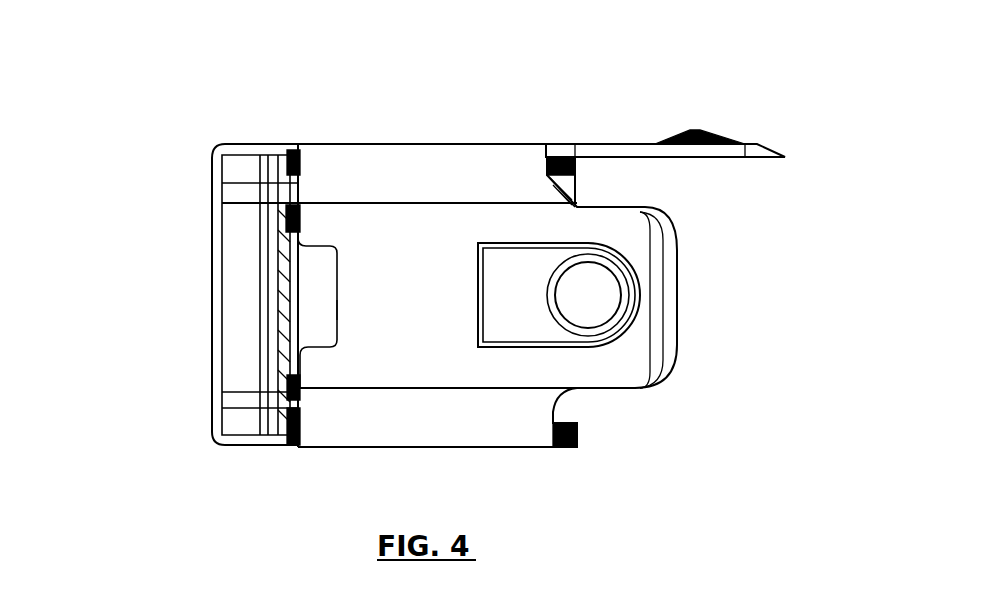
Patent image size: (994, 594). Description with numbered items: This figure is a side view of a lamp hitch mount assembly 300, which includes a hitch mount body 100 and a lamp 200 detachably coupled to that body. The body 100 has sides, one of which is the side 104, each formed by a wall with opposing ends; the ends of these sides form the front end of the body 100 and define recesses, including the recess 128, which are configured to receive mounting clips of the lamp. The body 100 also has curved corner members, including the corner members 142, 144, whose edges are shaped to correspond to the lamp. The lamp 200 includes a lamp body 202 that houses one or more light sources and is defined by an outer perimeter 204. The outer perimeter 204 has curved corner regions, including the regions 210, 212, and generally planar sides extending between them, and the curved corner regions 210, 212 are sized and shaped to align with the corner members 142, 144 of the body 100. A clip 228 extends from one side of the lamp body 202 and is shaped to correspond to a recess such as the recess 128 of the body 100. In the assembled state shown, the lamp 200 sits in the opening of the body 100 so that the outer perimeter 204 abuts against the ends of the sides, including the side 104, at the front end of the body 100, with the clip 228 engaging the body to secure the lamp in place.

The assembly 300 is at (228, 60).
The body 100 is at (453, 105).
The corner member 142 is at (467, 180).
The corner member 144 is at (410, 420).
The side 104 is at (423, 348).
The recess 128 is at (327, 310).
The clip 228 is at (310, 280).
The lamp 200 is at (178, 262).
The body 202 is at (212, 322).
The outer perimeter 204 is at (253, 420).
The curved corner region 210 is at (292, 158).
The curved corner region 212 is at (302, 405).